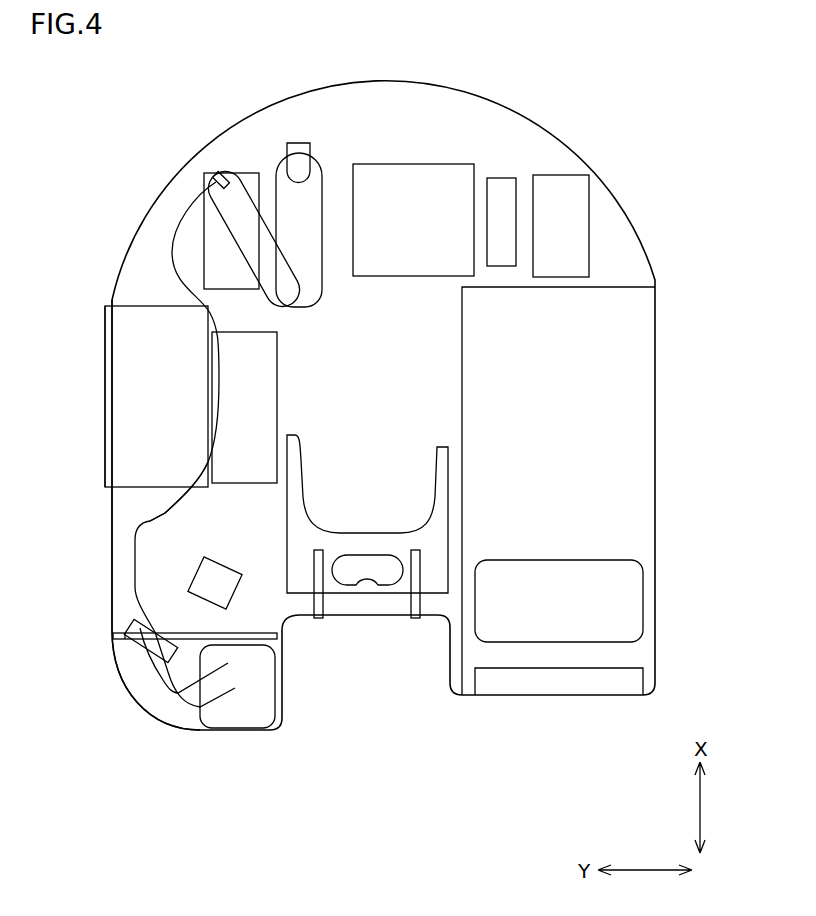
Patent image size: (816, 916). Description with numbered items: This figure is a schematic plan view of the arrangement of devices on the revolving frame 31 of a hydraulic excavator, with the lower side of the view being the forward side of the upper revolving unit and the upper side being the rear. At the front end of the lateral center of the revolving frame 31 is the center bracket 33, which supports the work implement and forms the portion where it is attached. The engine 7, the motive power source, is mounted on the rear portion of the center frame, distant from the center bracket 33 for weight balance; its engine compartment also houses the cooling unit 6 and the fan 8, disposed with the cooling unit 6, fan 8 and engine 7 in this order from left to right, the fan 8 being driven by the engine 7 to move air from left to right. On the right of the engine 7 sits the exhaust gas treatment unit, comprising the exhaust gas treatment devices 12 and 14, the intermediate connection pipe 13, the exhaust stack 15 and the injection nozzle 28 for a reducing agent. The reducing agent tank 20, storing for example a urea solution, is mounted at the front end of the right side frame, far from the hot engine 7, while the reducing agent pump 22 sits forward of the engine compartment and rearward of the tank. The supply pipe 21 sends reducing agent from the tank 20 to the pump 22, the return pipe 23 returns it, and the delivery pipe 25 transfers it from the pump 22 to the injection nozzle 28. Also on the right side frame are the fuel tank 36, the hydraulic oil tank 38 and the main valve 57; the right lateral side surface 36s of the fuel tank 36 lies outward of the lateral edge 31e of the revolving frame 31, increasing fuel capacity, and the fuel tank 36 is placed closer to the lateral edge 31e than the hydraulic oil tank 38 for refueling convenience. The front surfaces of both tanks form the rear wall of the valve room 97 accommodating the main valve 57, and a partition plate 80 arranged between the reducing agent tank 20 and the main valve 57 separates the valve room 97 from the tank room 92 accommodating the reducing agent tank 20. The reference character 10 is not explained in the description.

The cooling unit 6 is at (559, 198).
The engine 7 is at (408, 183).
The fan 8 is at (503, 195).
The battery 10 is at (642, 396).
The exhaust gas treatment device 12 is at (218, 237).
The intermediate connection pipe 13 is at (243, 202).
The exhaust gas treatment device 14 is at (308, 200).
The exhaust stack 15 is at (298, 160).
The reducing agent tank 20 is at (237, 713).
The supply pipe 21 is at (160, 678).
The reducing agent pump 22 is at (145, 641).
The return pipe 23 is at (183, 700).
The delivery pipe 25 is at (170, 262).
The injection nozzle 28 is at (215, 174).
The revolving frame 31 is at (378, 497).
The lateral edge 31e is at (110, 531).
The center bracket 33 is at (355, 543).
The fuel tank 36 is at (138, 372).
The lateral side surface 36s is at (104, 444).
The hydraulic oil tank 38 is at (245, 412).
The main valve 57 is at (213, 583).
The partition plate 80 is at (134, 624).
The tank room 92 is at (185, 713).
The valve room 97 is at (140, 504).